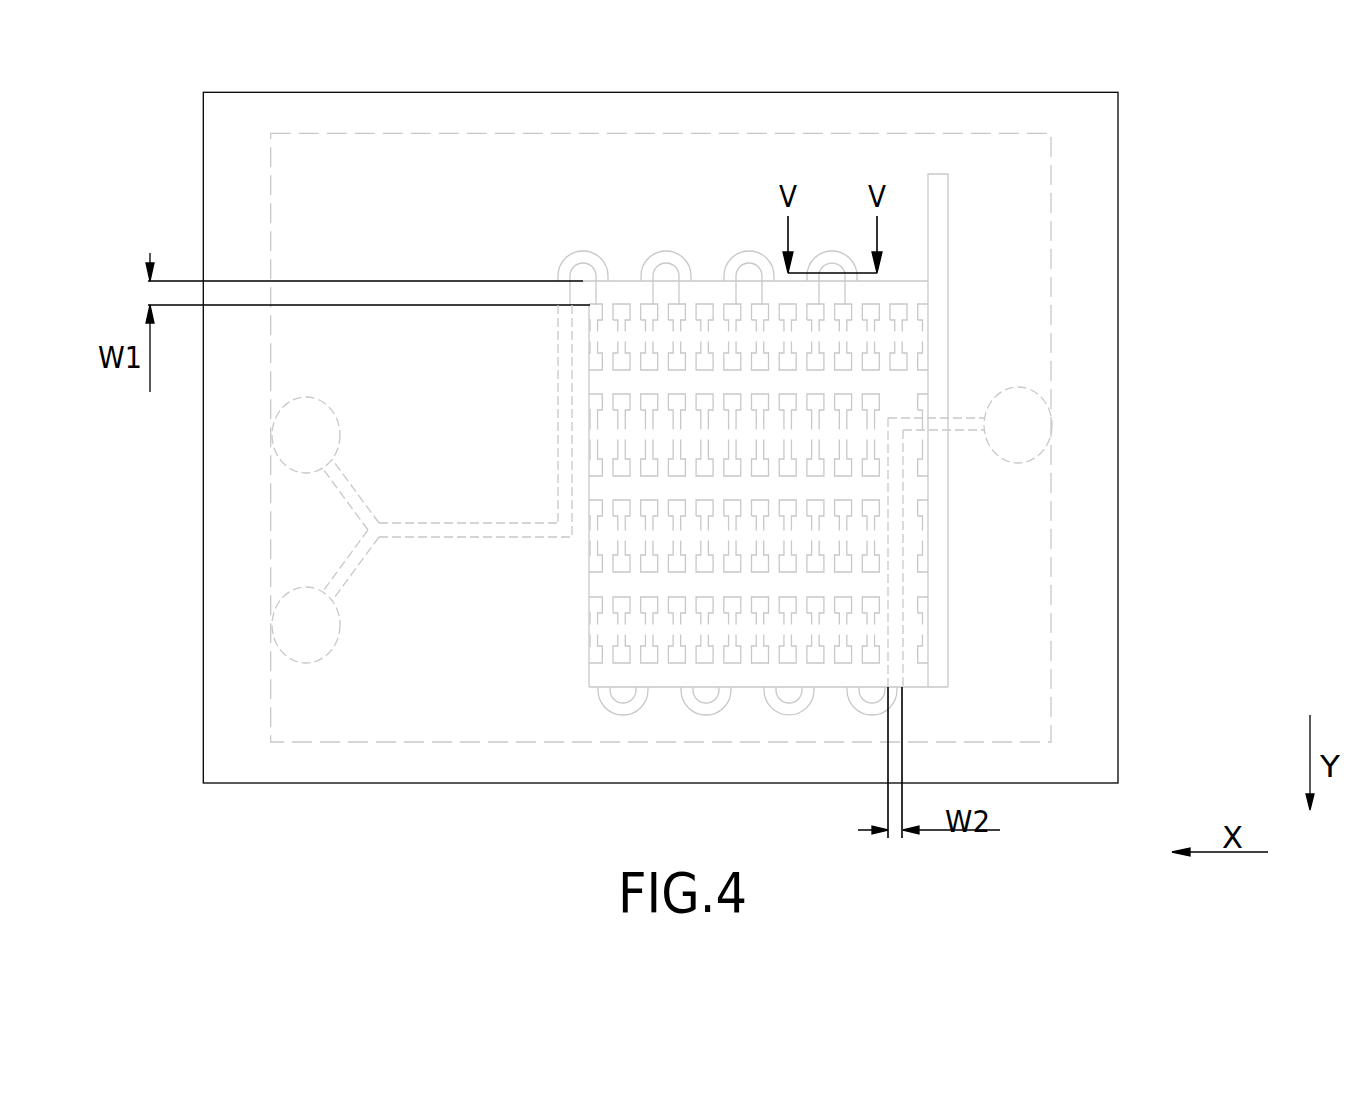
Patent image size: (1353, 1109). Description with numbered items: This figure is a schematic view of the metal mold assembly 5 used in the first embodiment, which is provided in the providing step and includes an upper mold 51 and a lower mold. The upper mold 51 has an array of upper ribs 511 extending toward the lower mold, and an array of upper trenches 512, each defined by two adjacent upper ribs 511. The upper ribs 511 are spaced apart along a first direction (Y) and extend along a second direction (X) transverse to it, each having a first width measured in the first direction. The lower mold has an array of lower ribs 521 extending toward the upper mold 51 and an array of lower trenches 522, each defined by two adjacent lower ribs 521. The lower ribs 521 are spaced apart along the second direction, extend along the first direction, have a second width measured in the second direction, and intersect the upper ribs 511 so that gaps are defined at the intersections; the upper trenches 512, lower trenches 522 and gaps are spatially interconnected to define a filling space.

The metal mold assembly 5 is at (1176, 134).
The upper mold 51 is at (1147, 217).
The upper ribs 511 is at (747, 383).
The upper trenches 512 is at (898, 410).
The lower ribs 521 is at (853, 568).
The lower trenches 522 is at (792, 510).